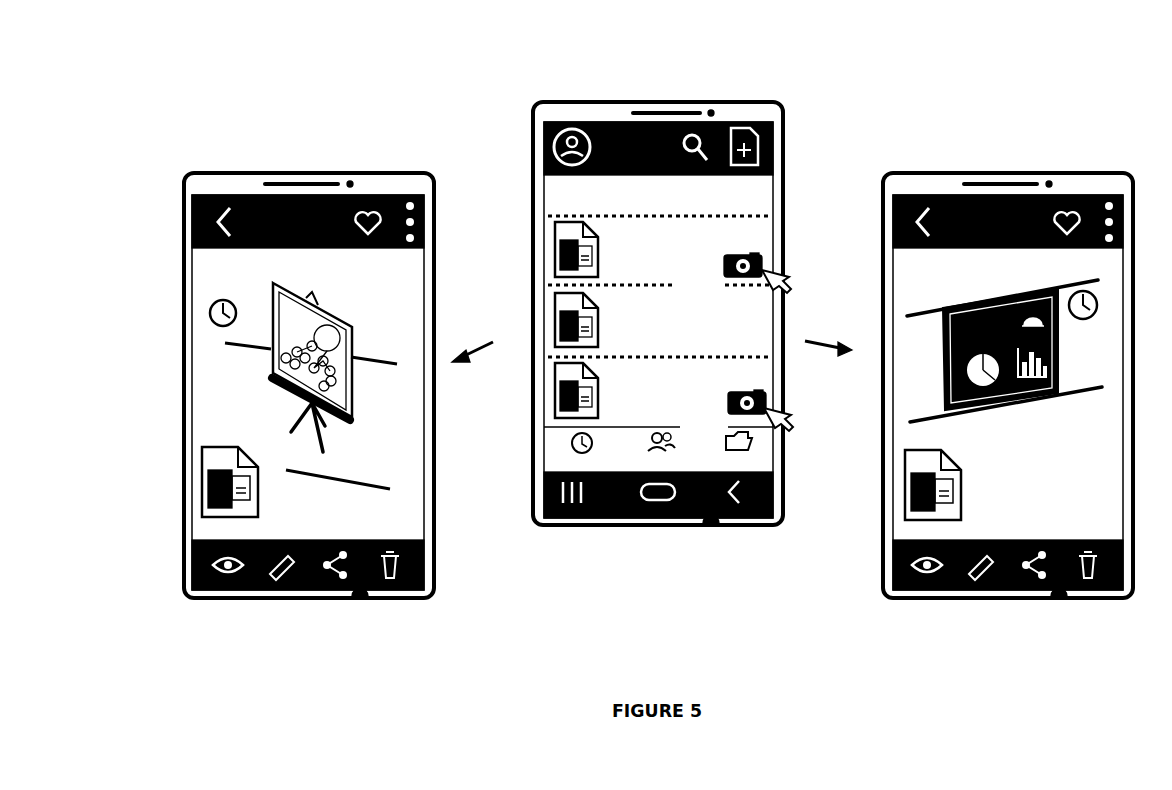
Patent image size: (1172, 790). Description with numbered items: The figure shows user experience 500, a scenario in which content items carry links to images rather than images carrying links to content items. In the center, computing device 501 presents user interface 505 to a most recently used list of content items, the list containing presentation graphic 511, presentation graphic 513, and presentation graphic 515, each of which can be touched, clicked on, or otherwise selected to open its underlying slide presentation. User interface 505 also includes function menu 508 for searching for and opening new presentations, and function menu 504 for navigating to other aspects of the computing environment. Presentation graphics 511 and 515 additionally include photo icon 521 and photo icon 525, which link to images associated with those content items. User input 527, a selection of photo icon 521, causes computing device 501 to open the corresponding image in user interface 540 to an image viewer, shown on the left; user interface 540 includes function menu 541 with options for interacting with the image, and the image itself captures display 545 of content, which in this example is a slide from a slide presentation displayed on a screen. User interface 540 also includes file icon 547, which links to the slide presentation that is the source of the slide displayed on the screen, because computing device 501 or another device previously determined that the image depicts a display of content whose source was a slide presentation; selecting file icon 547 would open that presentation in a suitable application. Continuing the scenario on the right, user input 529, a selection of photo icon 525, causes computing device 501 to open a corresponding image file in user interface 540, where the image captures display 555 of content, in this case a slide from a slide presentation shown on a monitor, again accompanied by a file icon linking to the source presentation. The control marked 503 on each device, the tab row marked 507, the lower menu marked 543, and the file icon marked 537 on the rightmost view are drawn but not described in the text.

The user experience 500 is at (112, 66).
The computing device 501 is at (187, 601).
The menu control 503 is at (426, 240).
The function menu 504 is at (658, 495).
The user interface 505 is at (659, 199).
The tab bar 507 is at (658, 448).
The function menu 508 is at (658, 148).
The presentation graphic 511 is at (659, 253).
The presentation graphic 513 is at (659, 325).
The presentation graphic 515 is at (661, 390).
The photo icon 521 is at (725, 266).
The photo icon 525 is at (729, 402).
The user input 527 is at (790, 288).
The user input 529 is at (793, 428).
The presentation file icon 537 is at (961, 474).
The user interface 540 is at (659, 374).
The function menu 541 is at (657, 221).
The action toolbar 543 is at (354, 540).
The display 545 is at (352, 418).
The file icon 547 is at (258, 470).
The display 555 is at (1043, 398).